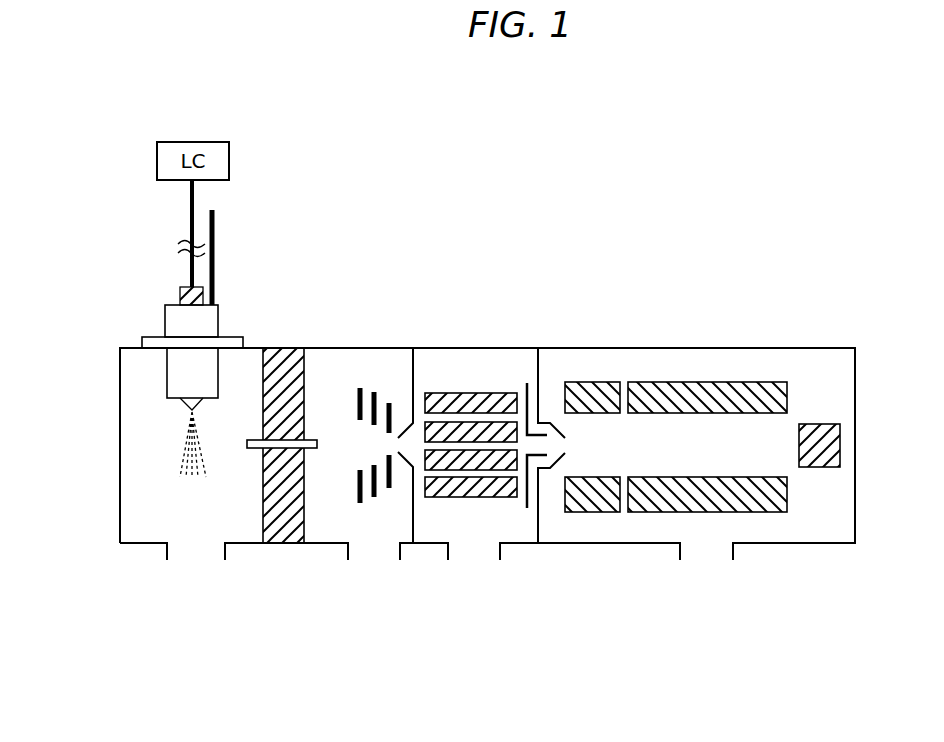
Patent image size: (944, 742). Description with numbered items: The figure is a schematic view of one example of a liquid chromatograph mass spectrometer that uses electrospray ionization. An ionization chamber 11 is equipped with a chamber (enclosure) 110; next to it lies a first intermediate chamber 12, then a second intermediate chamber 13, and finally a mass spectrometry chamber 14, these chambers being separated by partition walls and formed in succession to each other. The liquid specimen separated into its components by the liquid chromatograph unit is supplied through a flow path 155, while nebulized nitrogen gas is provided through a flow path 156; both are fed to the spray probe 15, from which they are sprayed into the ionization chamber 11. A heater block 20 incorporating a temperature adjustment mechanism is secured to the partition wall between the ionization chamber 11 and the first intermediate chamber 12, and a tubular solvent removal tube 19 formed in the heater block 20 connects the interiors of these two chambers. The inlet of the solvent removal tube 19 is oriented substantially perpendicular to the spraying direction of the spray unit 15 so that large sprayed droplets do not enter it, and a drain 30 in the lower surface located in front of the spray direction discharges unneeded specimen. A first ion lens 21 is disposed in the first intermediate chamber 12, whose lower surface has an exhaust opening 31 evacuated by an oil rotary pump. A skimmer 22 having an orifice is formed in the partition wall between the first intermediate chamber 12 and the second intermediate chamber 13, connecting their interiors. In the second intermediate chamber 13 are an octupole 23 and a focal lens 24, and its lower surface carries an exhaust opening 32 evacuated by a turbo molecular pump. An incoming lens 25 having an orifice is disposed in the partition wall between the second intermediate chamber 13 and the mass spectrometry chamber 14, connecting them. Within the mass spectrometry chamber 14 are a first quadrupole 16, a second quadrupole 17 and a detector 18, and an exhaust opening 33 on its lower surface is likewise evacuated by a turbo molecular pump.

The chamber (enclosure) 110 is at (120, 510).
The ionization chamber 11 is at (155, 448).
The first intermediate chamber 12 is at (330, 543).
The second intermediate chamber 13 is at (517, 522).
The mass spectrometry chamber 14 is at (620, 522).
The spray unit 15 is at (167, 370).
The flow path 155 is at (192, 265).
The flow path 156 is at (213, 222).
The solvent removal tube 19 is at (277, 440).
The heater block 20 is at (283, 543).
The first ion lens 21 is at (360, 388).
The skimmer 22 is at (413, 362).
The octupole 23 is at (460, 392).
The focal lens 24 is at (518, 388).
The incoming lens 25 is at (537, 362).
The first quadrupole 16 is at (592, 382).
The second quadrupole 17 is at (705, 382).
The detector 18 is at (820, 424).
The drain 30 is at (197, 548).
The exhaust opening 31 is at (375, 548).
The exhaust port of second intermediate vacuum chamber 32 is at (473, 548).
The exhaust opening 33 is at (705, 548).